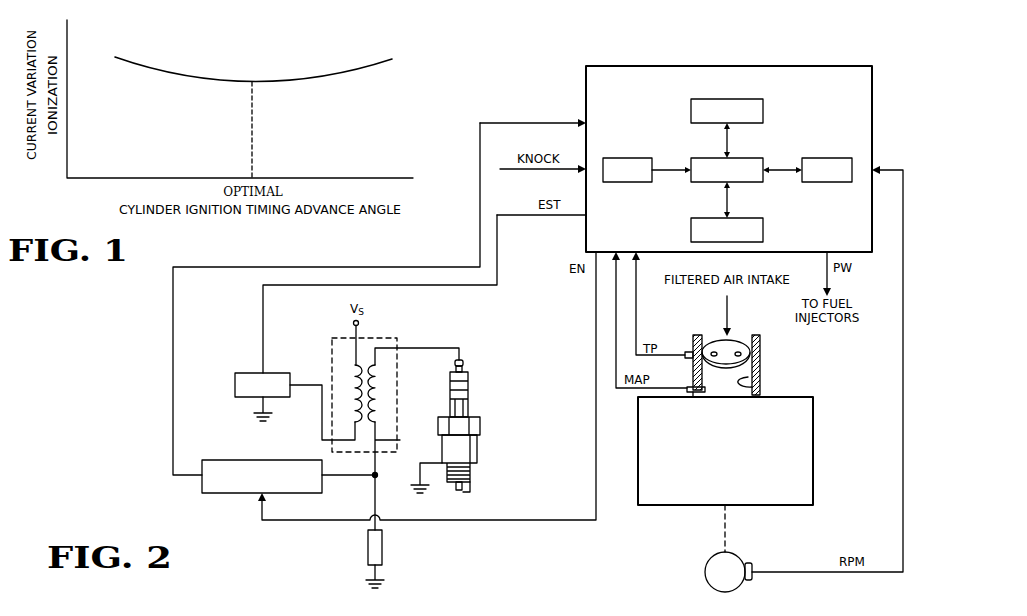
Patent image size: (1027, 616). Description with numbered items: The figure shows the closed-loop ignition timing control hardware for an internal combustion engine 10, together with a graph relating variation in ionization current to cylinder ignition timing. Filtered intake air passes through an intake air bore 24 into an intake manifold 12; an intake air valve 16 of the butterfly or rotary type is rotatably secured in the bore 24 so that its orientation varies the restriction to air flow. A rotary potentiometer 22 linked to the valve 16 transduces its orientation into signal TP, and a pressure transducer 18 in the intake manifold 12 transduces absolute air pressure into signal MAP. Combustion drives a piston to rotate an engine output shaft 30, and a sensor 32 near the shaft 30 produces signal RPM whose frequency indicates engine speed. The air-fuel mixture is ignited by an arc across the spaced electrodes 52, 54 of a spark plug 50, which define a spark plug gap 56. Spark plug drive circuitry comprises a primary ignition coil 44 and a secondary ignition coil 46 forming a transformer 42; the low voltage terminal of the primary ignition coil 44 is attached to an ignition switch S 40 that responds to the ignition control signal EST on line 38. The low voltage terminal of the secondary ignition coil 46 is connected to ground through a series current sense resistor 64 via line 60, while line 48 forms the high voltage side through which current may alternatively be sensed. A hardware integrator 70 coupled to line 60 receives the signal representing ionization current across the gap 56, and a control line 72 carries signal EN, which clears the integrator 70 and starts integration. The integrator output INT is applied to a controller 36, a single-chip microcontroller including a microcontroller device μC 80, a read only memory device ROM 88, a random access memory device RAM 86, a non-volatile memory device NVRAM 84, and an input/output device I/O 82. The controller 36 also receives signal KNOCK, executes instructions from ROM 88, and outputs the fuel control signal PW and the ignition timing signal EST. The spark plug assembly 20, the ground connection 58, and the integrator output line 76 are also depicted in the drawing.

The internal combustion engine 10 is at (815, 413).
The intake manifold 12 is at (698, 389).
The intake air valve 16 is at (761, 338).
The pressure transducer 18 is at (694, 394).
The spark plug 20 is at (484, 420).
The rotary potentiometer 22 is at (688, 352).
The intake air bore 24 is at (760, 378).
The engine output shaft 30 is at (716, 573).
The sensor 32 is at (753, 566).
The controller 36 is at (875, 121).
The line 38 is at (263, 318).
The ignition switch S 40 is at (240, 373).
The transformer 42 is at (332, 338).
The primary ignition coil 44 is at (350, 385).
The secondary ignition coil 46 is at (382, 388).
The line 48 is at (411, 348).
The spark plug 50 is at (468, 388).
The electrode 52 is at (471, 480).
The electrode 54 is at (455, 484).
The spark plug gap 56 is at (463, 492).
The ground connection 58 is at (420, 463).
The line 60 is at (400, 440).
The series current sense resistor 64 is at (382, 548).
The hardware integrator 70 is at (232, 493).
The control line 72 is at (490, 522).
The integrator output conductor 76 is at (523, 122).
The microcontroller device μC 80 is at (700, 158).
The input/output device I/O 82 is at (691, 232).
The non-volatile memory device NVRAM 84 is at (763, 117).
The random access memory device RAM 86 is at (818, 158).
The read only memory device ROM 88 is at (633, 158).